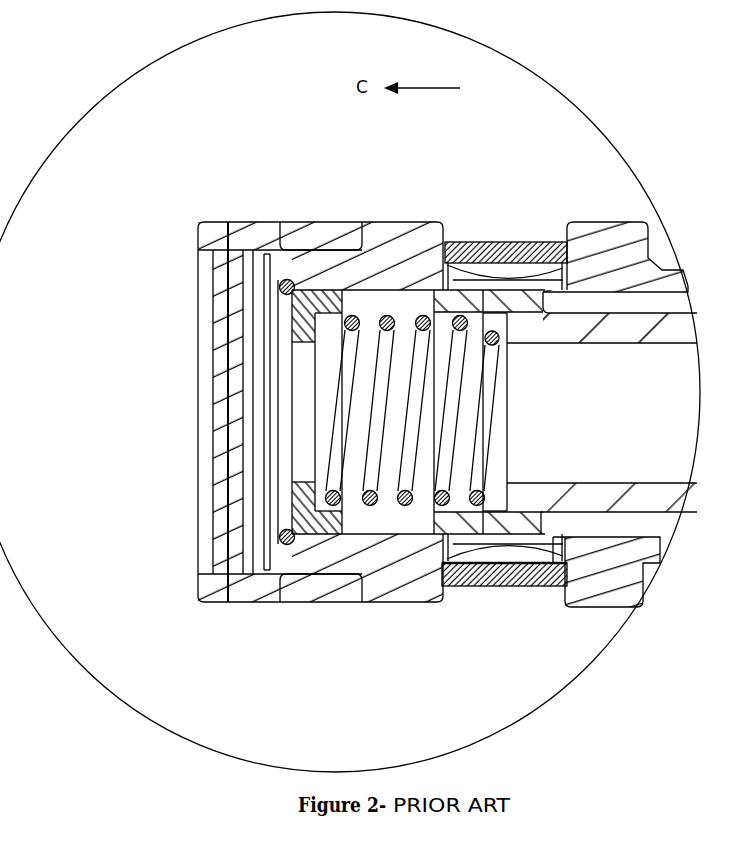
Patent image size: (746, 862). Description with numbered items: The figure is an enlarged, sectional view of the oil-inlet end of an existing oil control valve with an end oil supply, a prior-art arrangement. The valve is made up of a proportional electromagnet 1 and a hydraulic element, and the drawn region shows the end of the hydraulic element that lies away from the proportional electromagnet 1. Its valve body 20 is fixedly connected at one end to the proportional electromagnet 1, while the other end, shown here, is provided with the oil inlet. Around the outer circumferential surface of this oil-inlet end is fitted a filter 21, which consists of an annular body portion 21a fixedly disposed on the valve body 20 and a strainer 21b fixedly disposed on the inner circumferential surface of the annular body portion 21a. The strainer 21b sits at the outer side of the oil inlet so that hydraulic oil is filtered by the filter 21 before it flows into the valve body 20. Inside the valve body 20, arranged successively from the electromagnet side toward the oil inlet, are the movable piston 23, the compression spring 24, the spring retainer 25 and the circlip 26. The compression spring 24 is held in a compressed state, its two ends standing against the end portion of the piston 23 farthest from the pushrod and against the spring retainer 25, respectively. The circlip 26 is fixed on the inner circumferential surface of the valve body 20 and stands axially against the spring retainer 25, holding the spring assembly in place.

The proportional electromagnet 1 is at (253, 426).
The valve body 20 is at (378, 247).
The filter 21 is at (155, 411).
The annular body portion 21a is at (213, 234).
The strainer 21b is at (213, 279).
The movable piston 23 is at (528, 316).
The compression spring 24 is at (450, 262).
The spring retainer 25 is at (321, 290).
The circlip 26 is at (284, 279).